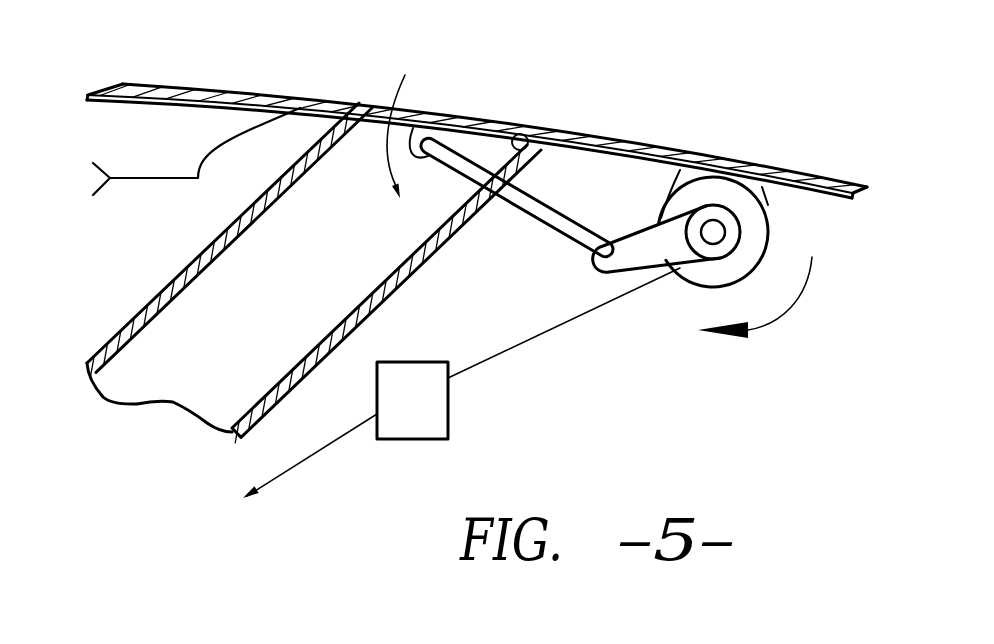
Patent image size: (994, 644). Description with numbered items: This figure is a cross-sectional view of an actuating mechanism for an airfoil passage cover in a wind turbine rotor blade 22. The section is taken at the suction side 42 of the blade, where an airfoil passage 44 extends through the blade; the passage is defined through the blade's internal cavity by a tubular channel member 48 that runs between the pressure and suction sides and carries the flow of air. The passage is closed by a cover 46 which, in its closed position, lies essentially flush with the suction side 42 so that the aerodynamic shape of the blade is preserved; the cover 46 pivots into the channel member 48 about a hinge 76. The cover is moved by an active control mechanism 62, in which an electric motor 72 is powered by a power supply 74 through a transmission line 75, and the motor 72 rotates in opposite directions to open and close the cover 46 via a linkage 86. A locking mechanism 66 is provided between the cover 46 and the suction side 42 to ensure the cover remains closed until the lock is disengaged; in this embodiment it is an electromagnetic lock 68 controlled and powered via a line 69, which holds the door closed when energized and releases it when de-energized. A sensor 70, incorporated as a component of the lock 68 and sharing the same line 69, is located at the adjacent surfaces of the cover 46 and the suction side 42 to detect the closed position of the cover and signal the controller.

The wind turbine rotor blade 22 is at (789, 114).
The suction side 42 is at (222, 88).
The airfoil passage 44 is at (182, 380).
The cover 46 is at (447, 113).
The channel member 48 is at (397, 290).
The active control mechanism 62 is at (642, 186).
The locking mechanism 66 is at (381, 80).
The electromagnetic lock 68 is at (350, 103).
The line 69 is at (177, 183).
The sensor 70 is at (368, 123).
The electric motor 72 is at (757, 237).
The power supply 74 is at (425, 403).
The transmission line 75 is at (535, 342).
The hinge 76 is at (516, 132).
The linkage 86 is at (532, 222).